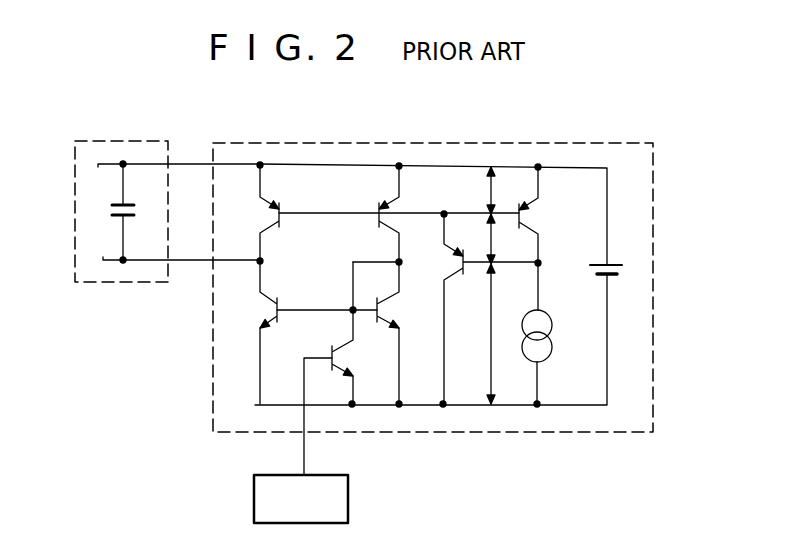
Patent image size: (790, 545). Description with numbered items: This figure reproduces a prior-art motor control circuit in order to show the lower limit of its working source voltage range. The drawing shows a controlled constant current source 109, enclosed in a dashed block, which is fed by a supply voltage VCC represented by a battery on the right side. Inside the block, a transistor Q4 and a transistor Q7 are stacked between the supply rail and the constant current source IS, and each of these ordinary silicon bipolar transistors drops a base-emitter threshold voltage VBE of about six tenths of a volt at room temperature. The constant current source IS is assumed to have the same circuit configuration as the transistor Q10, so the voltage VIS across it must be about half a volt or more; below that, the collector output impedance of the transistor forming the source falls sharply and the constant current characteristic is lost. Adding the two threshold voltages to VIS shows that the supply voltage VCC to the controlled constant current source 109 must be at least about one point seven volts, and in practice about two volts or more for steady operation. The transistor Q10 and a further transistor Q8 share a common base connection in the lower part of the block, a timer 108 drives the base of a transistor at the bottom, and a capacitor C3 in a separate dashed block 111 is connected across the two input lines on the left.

The capacitor block 111 is at (145, 141).
The capacitor C3 is at (112, 211).
The controlled constant current source 109 is at (490, 144).
The transistor Q10 is at (264, 293).
The transistor Q8 is at (386, 324).
The transistor Q7 is at (453, 262).
The transistor Q4 is at (530, 212).
The constant current source IS is at (556, 331).
The supply voltage VCC is at (622, 268).
The base-emitter threshold voltage VBE is at (492, 215).
The supply voltage for the constant current source VIS is at (486, 334).
The timer 108 is at (348, 500).